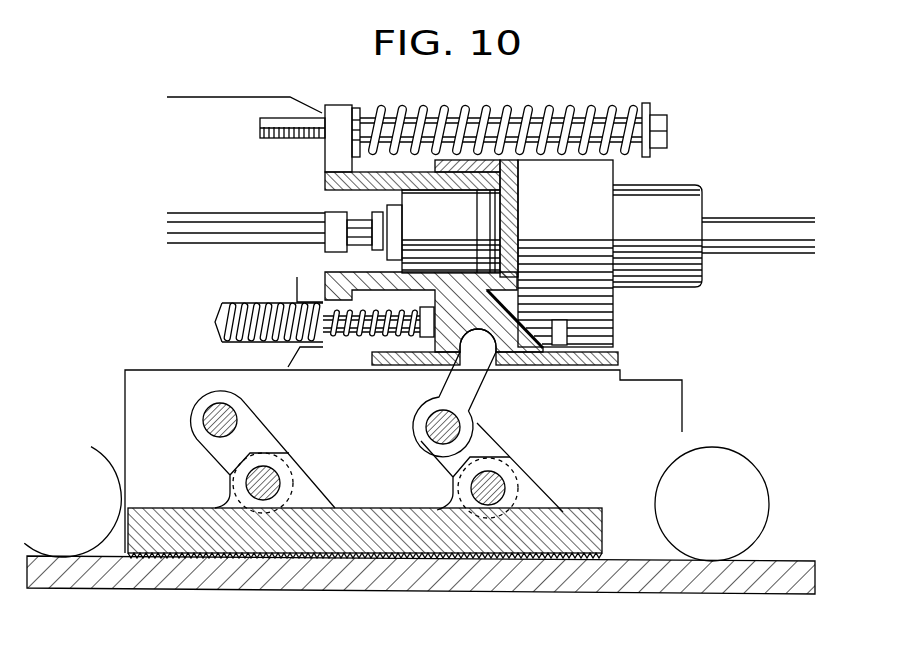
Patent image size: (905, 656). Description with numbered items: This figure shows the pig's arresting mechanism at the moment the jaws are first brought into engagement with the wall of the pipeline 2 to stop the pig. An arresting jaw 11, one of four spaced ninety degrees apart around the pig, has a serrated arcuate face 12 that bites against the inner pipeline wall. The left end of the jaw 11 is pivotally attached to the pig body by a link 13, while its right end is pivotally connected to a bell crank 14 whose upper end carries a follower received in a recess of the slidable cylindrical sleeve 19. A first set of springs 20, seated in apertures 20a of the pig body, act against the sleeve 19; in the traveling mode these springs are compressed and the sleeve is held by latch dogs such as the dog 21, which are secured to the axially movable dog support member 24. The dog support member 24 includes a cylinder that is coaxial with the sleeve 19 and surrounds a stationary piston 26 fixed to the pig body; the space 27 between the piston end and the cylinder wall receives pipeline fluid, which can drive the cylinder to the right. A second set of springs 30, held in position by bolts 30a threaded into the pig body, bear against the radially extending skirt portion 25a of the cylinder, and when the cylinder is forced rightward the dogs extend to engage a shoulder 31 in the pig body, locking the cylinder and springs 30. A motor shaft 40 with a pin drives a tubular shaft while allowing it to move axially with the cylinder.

The pipeline 2 is at (557, 593).
The arresting jaw 11 is at (343, 527).
The serrated arcuate face 12 is at (237, 557).
The link 13 is at (257, 432).
The bell crank 14 is at (483, 442).
The slidable cylindrical sleeve 19 is at (620, 357).
The first set of springs 20 is at (243, 305).
The aperture 20a is at (253, 337).
The dog 21 is at (567, 332).
The dog support member 24 is at (622, 175).
The skirt portion 25a is at (333, 110).
The stationary piston 26 is at (455, 234).
The space 27 is at (503, 218).
The second set of springs 30 is at (590, 108).
The bolt 30a is at (457, 108).
The shoulder 31 is at (628, 370).
The shaft 40 is at (759, 225).